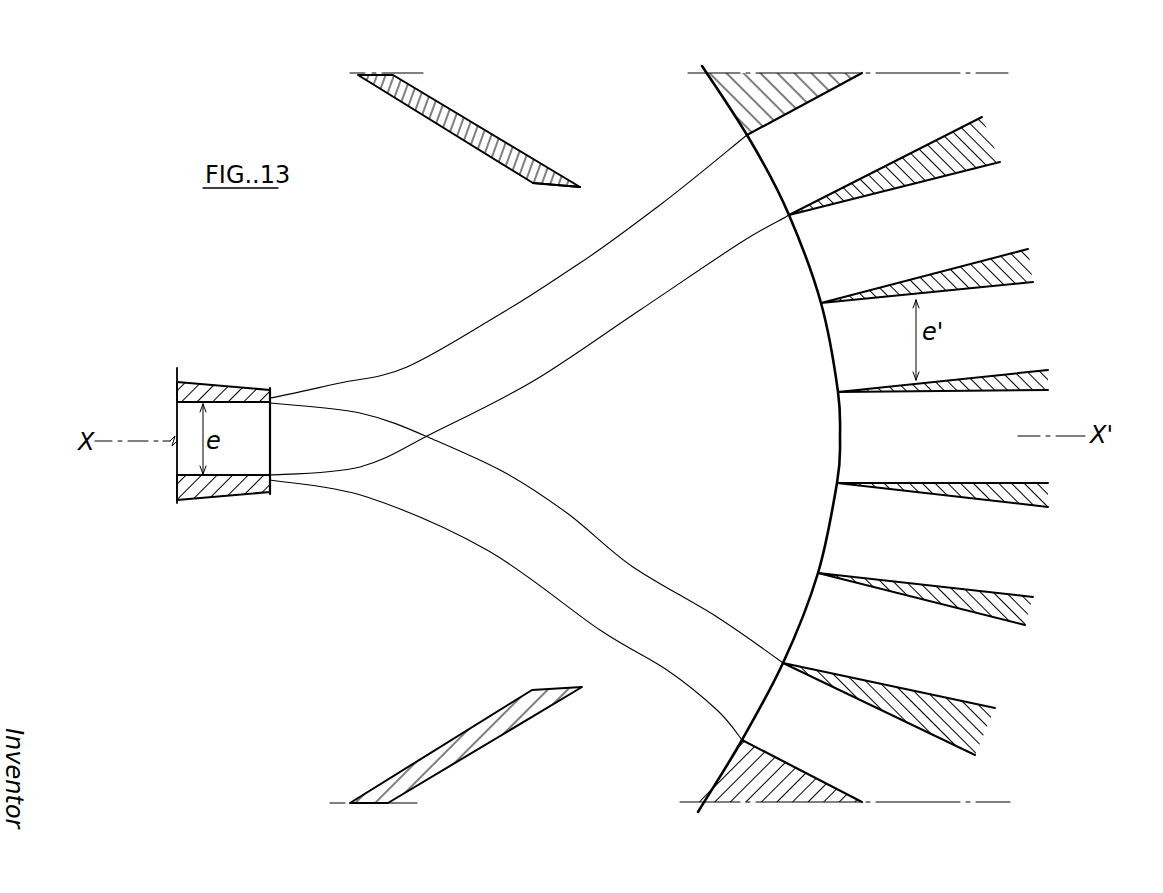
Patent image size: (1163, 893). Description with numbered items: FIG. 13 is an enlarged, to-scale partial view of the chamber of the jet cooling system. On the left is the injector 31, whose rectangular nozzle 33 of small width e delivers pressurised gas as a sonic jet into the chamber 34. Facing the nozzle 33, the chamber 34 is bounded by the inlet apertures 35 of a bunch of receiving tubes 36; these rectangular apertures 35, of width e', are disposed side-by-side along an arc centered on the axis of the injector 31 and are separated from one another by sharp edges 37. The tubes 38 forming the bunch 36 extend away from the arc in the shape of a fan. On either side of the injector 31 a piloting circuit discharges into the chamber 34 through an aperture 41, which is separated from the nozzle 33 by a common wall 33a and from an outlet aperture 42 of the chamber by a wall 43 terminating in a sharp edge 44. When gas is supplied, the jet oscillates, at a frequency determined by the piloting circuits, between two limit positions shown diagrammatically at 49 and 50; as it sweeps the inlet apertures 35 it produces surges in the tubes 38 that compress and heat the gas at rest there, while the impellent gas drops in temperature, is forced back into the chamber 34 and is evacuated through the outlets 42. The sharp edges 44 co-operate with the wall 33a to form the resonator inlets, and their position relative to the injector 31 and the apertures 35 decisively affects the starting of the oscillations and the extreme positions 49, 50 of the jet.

The injector 31 is at (209, 455).
The nozzle 33 is at (230, 404).
The common wall 33a is at (255, 497).
The chamber 34 is at (585, 452).
The inlet apertures 35 is at (800, 278).
The bunch of receiving tubes 36 is at (1055, 656).
The sharp edges 37 is at (818, 573).
The tubes 38 is at (1025, 305).
The aperture 41 is at (432, 297).
The outlet aperture 42 is at (692, 160).
The wall 43 is at (500, 148).
The sharp edge 44 is at (580, 187).
The limit position of the jet 49 is at (510, 558).
The limit position of the jet 50 is at (505, 330).